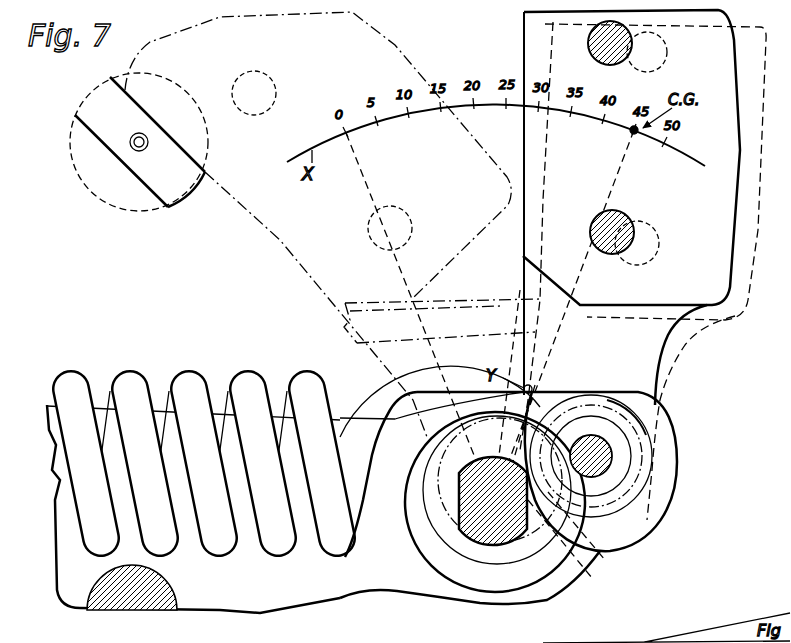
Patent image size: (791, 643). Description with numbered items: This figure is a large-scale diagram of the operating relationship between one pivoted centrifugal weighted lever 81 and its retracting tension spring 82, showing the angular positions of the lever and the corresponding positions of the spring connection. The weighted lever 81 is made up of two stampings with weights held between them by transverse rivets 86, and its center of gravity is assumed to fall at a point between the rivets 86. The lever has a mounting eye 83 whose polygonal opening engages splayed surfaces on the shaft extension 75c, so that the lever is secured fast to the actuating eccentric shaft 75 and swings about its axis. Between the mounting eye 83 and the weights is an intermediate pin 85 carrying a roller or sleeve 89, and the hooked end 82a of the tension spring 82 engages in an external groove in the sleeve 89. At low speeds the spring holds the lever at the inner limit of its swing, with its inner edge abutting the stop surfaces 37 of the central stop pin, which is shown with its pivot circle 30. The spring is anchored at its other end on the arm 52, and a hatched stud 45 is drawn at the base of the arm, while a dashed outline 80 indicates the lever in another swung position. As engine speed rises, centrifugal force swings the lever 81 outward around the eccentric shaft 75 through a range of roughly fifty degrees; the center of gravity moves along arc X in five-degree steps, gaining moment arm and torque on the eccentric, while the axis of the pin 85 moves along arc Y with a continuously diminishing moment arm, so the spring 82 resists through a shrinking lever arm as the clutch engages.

The cam 30 is at (100, 100).
The splayed flat surfaces 37 is at (157, 114).
The centrifugally responsive weighted lever 81 is at (521, 40).
The transverse rivets 86 is at (612, 63).
The plate 80 is at (648, 297).
The tension spring 82 is at (128, 378).
The hooked end 82a is at (667, 427).
The intermediate pin 85 is at (600, 462).
The roller or sleeve 89 is at (622, 490).
The shaft extension 75c is at (567, 548).
The mounting eye 83 is at (508, 586).
The eccentric shaft 75 is at (458, 538).
The spring housing 52 is at (215, 596).
The stud 45 is at (103, 606).